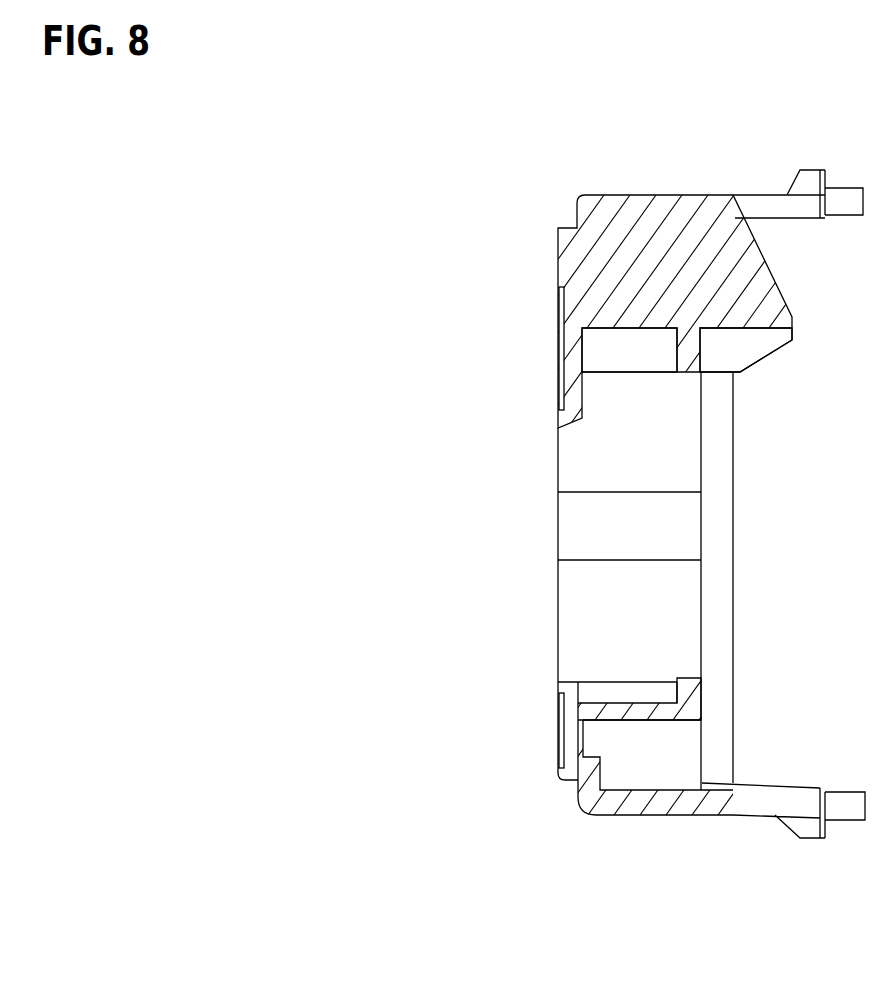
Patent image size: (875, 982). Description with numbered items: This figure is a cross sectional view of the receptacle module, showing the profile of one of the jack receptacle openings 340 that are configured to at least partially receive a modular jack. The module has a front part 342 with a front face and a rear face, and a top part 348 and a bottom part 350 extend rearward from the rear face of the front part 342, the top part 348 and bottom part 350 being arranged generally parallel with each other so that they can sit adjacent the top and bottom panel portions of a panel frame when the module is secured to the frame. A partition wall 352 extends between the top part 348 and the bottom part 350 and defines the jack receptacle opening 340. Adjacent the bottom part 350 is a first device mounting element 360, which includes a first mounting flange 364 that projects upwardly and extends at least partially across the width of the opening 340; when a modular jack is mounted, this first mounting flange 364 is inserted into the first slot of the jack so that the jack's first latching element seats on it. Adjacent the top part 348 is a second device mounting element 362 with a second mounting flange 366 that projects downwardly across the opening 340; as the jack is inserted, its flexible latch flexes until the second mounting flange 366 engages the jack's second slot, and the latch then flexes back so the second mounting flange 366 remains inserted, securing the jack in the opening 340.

The jack receptacle opening 340 is at (353, 223).
The front part 342 is at (558, 322).
The top part 348 is at (762, 198).
The bottom part 350 is at (760, 805).
The partition wall 352 is at (683, 530).
The first device mounting element 360 is at (645, 692).
The second device mounting element 362 is at (652, 365).
The first mounting flange 364 is at (695, 688).
The second mounting flange 366 is at (697, 355).